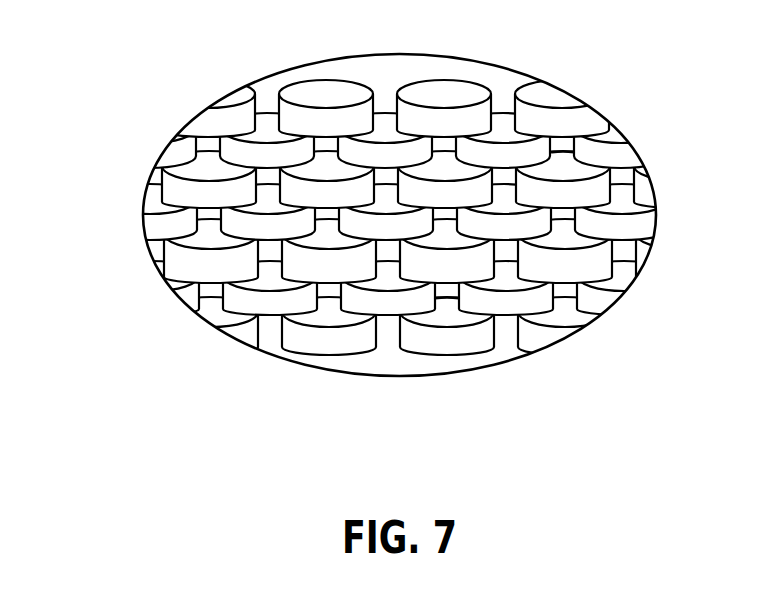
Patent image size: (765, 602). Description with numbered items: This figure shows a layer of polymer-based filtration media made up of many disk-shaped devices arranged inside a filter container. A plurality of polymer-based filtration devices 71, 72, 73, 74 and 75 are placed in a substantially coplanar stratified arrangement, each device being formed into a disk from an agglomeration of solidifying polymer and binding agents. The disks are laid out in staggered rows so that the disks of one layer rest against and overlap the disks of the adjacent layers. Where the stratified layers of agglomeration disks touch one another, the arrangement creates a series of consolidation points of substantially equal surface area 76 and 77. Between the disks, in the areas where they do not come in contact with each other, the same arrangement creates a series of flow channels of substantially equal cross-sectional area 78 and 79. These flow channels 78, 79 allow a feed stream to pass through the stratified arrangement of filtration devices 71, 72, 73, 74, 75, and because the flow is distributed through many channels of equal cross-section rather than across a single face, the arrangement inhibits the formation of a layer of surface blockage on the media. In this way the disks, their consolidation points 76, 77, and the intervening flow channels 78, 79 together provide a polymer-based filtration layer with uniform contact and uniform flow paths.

The polymer-based filtration device 71 is at (533, 90).
The polymer-based filtration device 72 is at (292, 90).
The polymer-based filtration device 73 is at (173, 263).
The polymer-based filtration device 74 is at (245, 333).
The polymer-based filtration device 75 is at (468, 338).
The consolidation point 76 is at (578, 280).
The consolidation point 77 is at (421, 130).
The flow channel 78 is at (447, 292).
The flow channel 79 is at (564, 140).